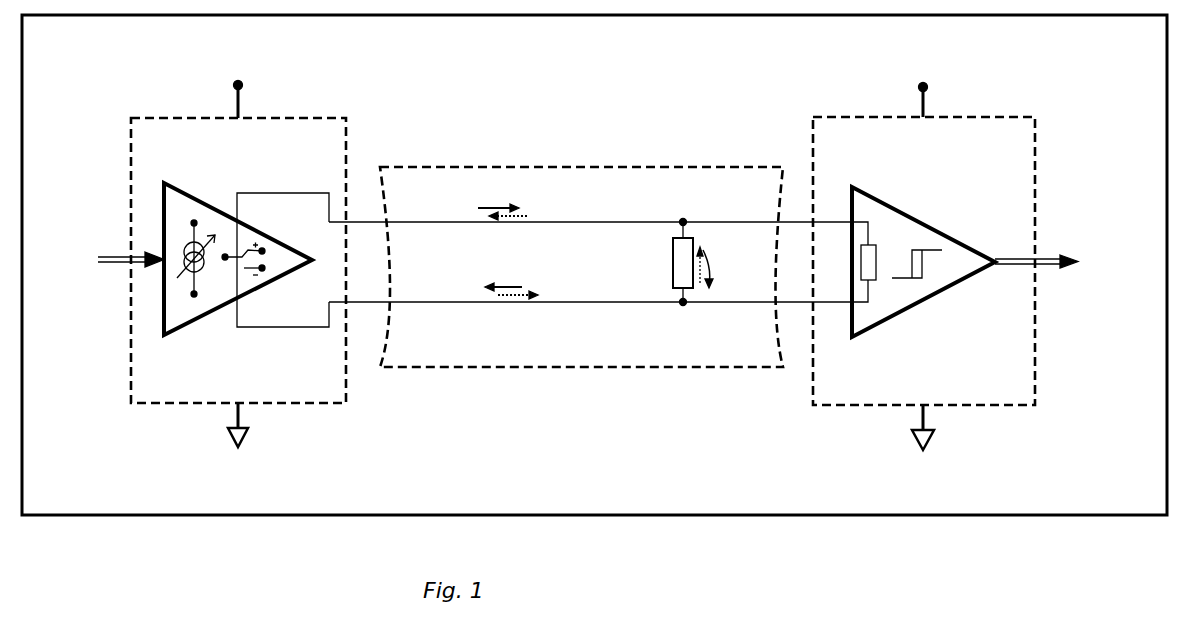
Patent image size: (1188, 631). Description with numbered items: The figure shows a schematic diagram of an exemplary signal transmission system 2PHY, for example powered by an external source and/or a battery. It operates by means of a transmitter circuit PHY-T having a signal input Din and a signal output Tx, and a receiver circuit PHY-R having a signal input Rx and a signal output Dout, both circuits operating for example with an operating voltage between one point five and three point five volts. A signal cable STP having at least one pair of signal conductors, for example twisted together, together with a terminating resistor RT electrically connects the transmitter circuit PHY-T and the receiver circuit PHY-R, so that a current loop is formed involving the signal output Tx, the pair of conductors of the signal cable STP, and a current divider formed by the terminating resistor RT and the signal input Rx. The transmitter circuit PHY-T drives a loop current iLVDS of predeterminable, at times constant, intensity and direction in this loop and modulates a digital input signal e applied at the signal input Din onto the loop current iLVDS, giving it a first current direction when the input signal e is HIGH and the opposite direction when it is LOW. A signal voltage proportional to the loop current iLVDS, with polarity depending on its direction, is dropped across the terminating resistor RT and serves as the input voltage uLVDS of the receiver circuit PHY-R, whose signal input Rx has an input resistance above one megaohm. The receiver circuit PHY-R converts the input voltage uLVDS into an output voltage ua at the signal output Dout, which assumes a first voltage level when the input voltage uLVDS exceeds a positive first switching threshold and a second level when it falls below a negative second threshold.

The signal transmission system 2PHY is at (178, 457).
The transmitter circuit PHY-T is at (333, 392).
The receiver circuit PHY-R is at (1020, 397).
The signal input Din is at (122, 238).
The input signal e is at (123, 261).
The signal output Tx is at (362, 207).
The signal input Rx is at (800, 215).
The signal cable STP is at (442, 359).
The loop current iLVDS is at (503, 242).
The input voltage uLVDS is at (728, 260).
The terminating resistor RT is at (680, 255).
The signal output Dout is at (1042, 240).
The output voltage ua is at (1050, 263).